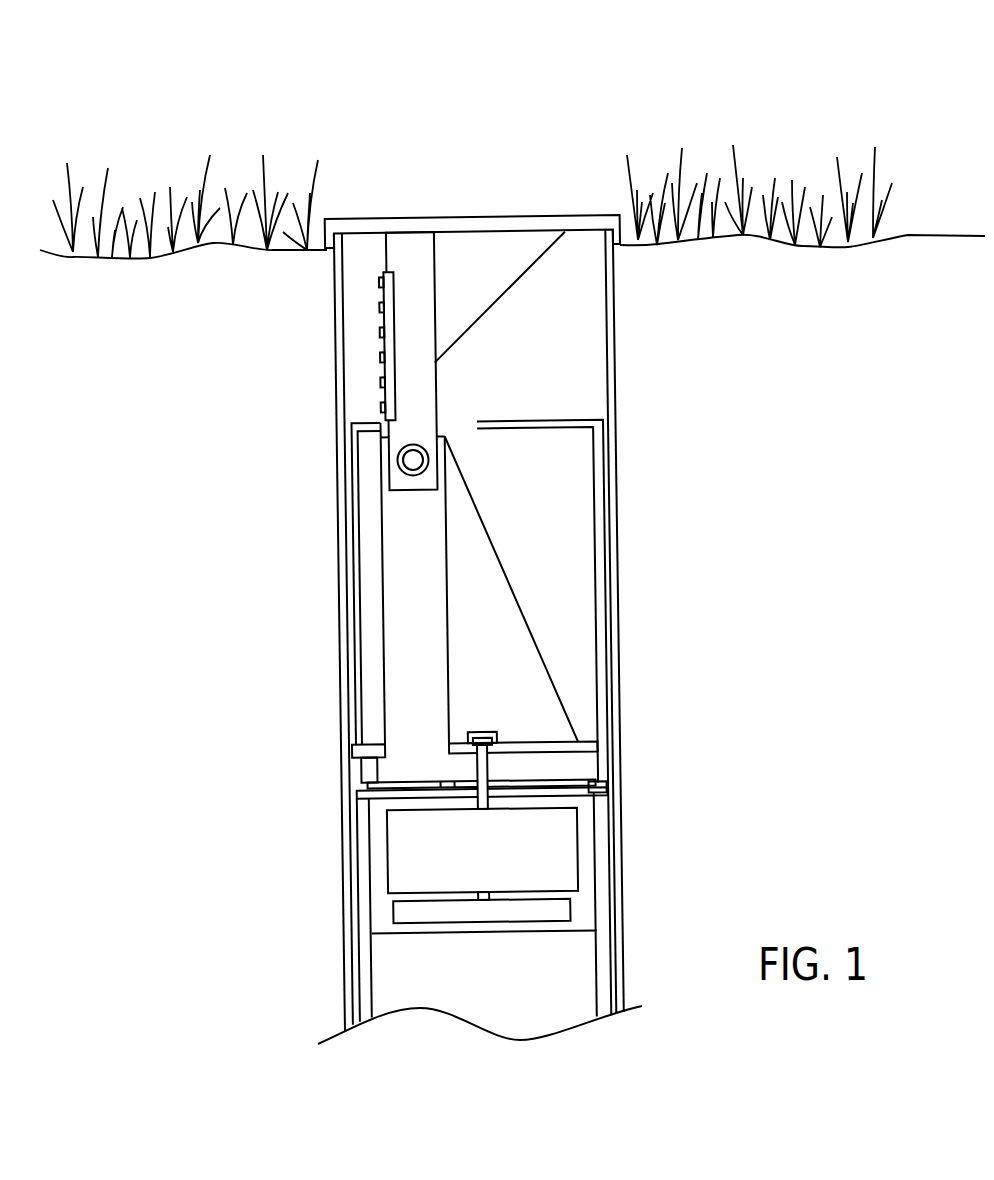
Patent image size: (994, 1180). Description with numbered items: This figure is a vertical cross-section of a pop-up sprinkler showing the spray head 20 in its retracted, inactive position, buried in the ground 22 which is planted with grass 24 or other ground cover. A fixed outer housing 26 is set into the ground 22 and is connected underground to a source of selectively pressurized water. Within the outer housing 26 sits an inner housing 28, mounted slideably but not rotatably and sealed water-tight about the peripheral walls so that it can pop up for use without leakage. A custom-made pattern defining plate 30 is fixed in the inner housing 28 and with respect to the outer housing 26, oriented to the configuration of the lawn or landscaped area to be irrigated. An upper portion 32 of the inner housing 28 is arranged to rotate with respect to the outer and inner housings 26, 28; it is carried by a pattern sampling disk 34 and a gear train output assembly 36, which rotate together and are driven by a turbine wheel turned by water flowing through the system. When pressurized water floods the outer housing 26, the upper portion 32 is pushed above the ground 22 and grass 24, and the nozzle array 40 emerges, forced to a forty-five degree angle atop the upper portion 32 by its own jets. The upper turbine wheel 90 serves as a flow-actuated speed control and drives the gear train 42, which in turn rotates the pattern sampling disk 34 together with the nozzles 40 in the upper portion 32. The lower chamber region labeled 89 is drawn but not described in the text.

The spray head 20 is at (433, 80).
The ground 22 is at (783, 343).
The grass 24 is at (248, 153).
The fixed outer housing 26 is at (337, 423).
The inner housing 28 is at (370, 962).
The pattern defining plate 30 is at (565, 806).
The upper portion of the inner housing 32 is at (358, 675).
The pattern sampling disk 34 is at (557, 780).
The gear train output assembly 36 is at (481, 738).
The nozzle array 40 is at (373, 374).
The gear train 42 is at (568, 833).
The lower chamber 89 is at (582, 975).
The upper turbine wheel 90 is at (560, 910).